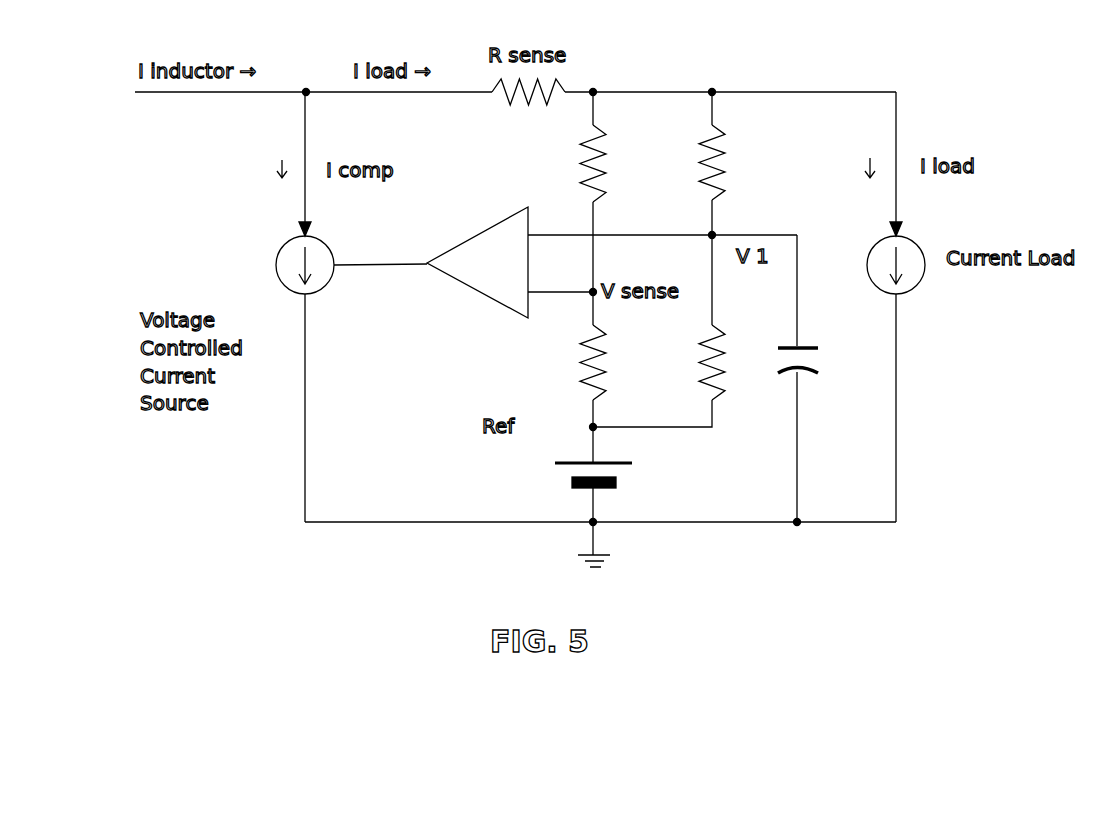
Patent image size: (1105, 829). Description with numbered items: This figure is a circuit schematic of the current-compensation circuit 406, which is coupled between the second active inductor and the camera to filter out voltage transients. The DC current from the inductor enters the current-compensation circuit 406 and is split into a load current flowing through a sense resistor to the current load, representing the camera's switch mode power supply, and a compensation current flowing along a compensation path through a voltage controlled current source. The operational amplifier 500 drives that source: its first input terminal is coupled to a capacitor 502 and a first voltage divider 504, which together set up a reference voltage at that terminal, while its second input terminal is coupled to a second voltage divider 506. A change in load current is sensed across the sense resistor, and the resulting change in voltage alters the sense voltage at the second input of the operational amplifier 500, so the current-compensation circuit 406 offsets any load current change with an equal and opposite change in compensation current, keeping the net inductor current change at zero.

The operational amplifier 500 is at (477, 237).
The capacitor 502 is at (825, 378).
The first voltage divider 504 is at (745, 190).
The second voltage divider 506 is at (631, 191).
The current-compensation circuit 406 is at (775, 568).